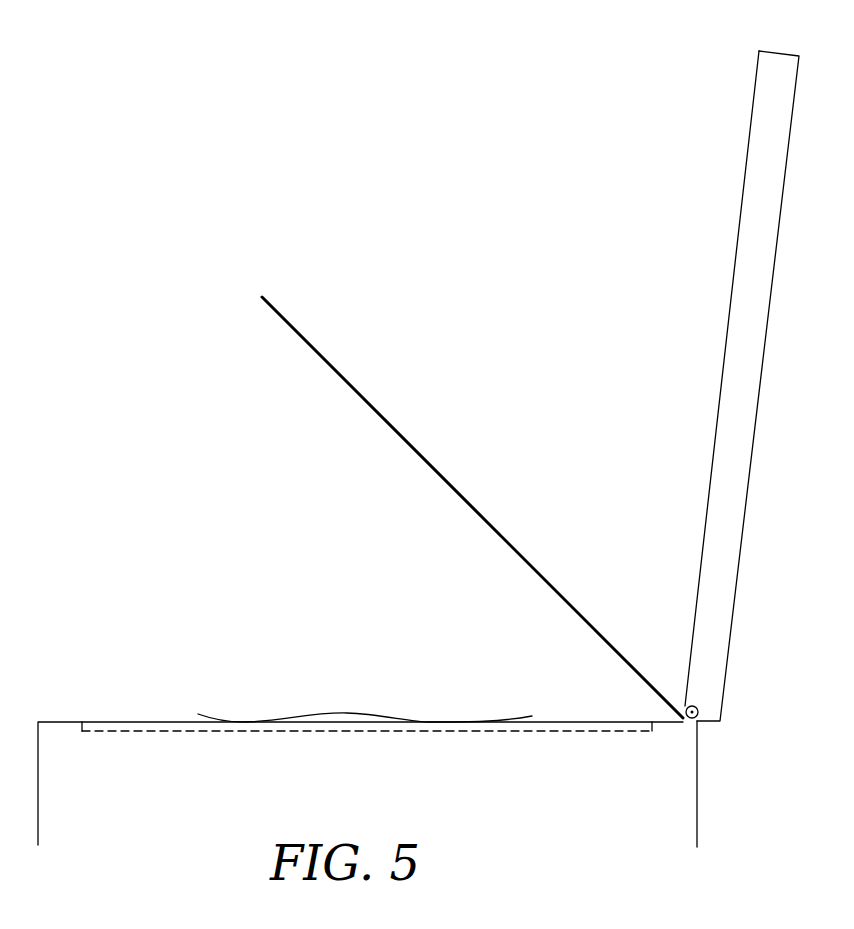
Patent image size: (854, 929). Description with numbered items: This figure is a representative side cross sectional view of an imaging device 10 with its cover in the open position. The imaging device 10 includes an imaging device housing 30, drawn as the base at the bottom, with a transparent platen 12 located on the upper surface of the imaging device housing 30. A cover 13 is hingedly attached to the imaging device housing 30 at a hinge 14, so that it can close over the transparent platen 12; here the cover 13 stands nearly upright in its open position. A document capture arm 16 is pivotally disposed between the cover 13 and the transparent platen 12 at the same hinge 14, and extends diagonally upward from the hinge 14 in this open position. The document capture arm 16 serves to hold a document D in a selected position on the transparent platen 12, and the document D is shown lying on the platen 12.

The imaging device 10 is at (240, 205).
The transparent platen 12 is at (132, 733).
The cover 13 is at (781, 58).
The hinge 14 is at (691, 719).
The document capture arm 16 is at (477, 510).
The imaging device housing 30 is at (55, 735).
The document D is at (317, 712).